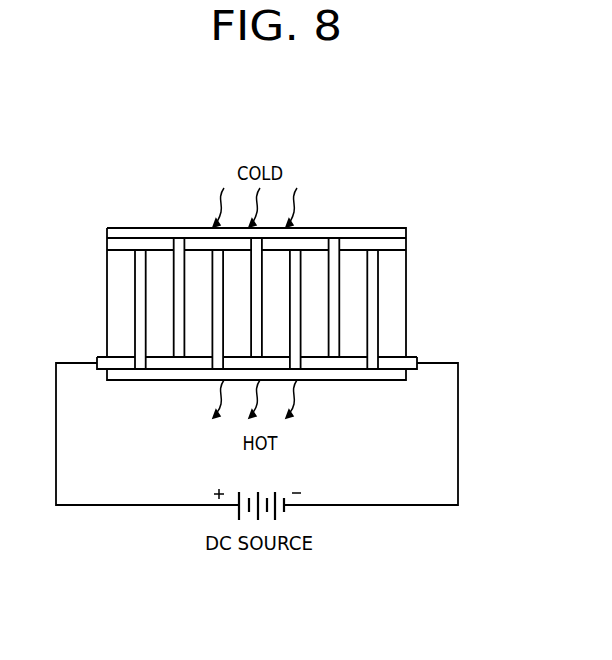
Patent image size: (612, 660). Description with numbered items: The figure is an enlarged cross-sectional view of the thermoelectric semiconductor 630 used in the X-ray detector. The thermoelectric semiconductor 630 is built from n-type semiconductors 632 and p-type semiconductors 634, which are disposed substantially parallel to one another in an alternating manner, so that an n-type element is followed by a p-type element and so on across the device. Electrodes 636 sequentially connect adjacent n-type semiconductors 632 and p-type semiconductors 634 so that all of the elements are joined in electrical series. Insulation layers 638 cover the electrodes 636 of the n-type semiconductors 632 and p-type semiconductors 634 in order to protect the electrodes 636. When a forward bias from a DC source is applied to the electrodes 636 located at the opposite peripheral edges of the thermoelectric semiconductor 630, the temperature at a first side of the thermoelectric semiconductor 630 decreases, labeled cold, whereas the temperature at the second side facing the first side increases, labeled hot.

The thermoelectric semiconductor 630 is at (317, 303).
The n-type semiconductors 632 is at (362, 279).
The p-type semiconductors 634 is at (392, 322).
The electrodes 636 is at (295, 352).
The insulation layers 638 is at (406, 233).